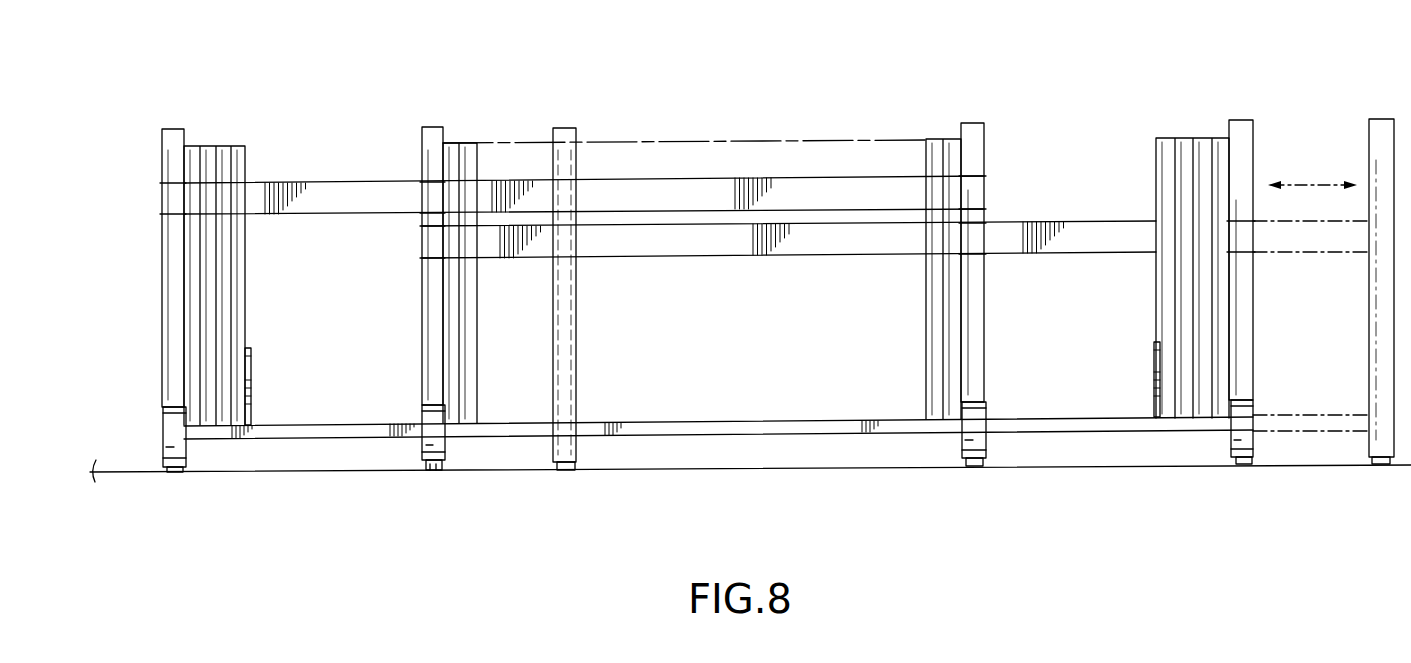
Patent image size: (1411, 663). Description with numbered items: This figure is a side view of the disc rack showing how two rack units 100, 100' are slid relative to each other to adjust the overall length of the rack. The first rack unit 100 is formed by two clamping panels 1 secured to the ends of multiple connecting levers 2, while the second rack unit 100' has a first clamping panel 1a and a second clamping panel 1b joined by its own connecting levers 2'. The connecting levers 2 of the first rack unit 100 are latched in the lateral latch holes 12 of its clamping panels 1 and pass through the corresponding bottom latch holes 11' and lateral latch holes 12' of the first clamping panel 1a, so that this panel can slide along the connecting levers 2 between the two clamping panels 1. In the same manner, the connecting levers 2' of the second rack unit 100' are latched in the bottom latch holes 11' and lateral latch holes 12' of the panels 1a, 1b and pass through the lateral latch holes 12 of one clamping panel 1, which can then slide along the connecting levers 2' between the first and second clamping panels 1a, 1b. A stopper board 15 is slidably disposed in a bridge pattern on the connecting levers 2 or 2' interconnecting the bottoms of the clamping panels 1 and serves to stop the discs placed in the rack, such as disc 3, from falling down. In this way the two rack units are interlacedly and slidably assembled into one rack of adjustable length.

The clamping panel 1 is at (167, 152).
The first clamping panel 1a is at (437, 124).
The second clamping panel 1b is at (1256, 128).
The connecting lever 2 is at (718, 310).
The connecting lever 2' is at (895, 334).
The panel 3 is at (237, 146).
The bottom latch hole 11' is at (457, 472).
The lateral latch hole 12 is at (576, 192).
The lateral latch hole 12' is at (834, 215).
The stopper board 15 is at (253, 362).
The rack unit 100 is at (223, 234).
The second rack unit 100' is at (1207, 229).